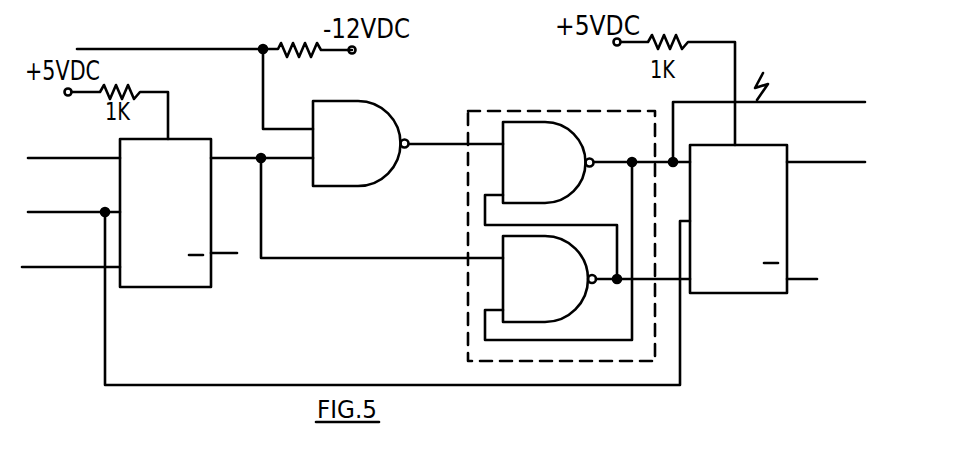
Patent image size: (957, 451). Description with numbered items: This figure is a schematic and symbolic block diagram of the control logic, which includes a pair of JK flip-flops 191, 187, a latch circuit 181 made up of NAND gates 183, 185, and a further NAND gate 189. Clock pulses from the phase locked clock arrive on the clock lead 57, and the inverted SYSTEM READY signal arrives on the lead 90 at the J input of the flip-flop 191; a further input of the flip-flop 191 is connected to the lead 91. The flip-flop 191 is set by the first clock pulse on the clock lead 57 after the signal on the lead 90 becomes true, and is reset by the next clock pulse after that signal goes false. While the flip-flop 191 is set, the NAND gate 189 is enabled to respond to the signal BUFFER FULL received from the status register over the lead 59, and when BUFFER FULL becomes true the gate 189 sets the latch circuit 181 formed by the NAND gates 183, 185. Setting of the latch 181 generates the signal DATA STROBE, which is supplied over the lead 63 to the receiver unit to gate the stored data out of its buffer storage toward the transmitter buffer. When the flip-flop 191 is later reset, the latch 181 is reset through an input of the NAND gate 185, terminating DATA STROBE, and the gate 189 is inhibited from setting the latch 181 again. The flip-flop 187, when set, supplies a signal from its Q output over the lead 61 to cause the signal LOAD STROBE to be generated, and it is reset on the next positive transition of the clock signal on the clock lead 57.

The lead 59 is at (216, 52).
The lead 90 is at (94, 153).
The clock lead 57 is at (43, 211).
The K input line of flip-flop 191 91 is at (40, 266).
The JK flip-flop 191 is at (145, 288).
The NAND gate 189 is at (366, 172).
The latch circuit 181 is at (561, 206).
The NAND gate 183 is at (560, 145).
The NAND gate 185 is at (560, 302).
The JK flip-flop 187 is at (735, 294).
The lead 63 is at (789, 103).
The lead 61 is at (836, 164).